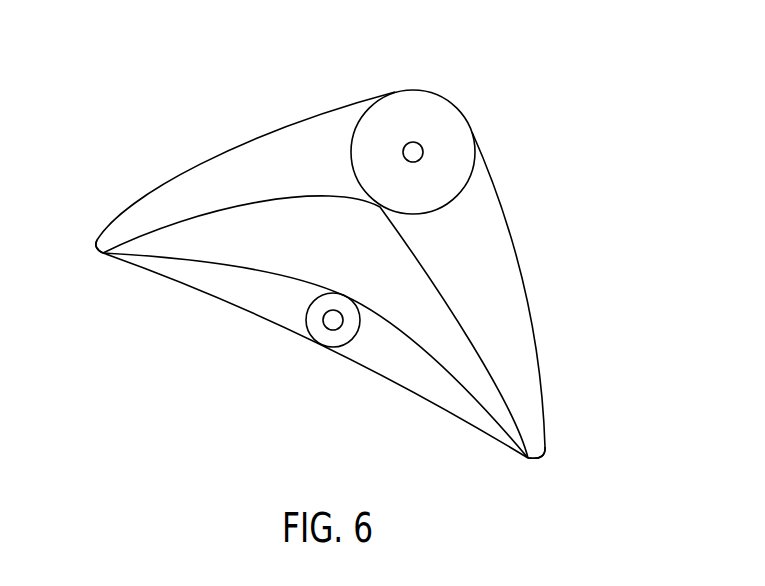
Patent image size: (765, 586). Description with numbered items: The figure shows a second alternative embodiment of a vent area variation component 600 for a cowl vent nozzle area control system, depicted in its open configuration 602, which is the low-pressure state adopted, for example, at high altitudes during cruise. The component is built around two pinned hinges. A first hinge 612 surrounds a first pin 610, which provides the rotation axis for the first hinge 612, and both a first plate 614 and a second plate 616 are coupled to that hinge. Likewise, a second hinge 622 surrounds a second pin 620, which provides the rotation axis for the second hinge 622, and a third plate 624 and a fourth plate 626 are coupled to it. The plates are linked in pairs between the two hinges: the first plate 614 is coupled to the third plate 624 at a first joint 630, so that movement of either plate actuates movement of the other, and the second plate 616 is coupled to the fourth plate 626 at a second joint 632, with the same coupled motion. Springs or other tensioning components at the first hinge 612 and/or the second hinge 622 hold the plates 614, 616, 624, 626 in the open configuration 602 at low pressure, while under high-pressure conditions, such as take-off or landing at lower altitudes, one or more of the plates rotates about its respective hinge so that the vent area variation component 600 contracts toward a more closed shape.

The vent area variation component 600 is at (152, 65).
The open configuration 602 is at (580, 262).
The first pin 610 is at (411, 142).
The first hinge 612 is at (442, 130).
The first plate 614 is at (492, 220).
The second plate 616 is at (277, 145).
The second pin 620 is at (326, 327).
The second hinge 622 is at (337, 338).
The third plate 624 is at (442, 395).
The fourth plate 626 is at (217, 285).
The first joint 630 is at (540, 475).
The second joint 632 is at (95, 256).